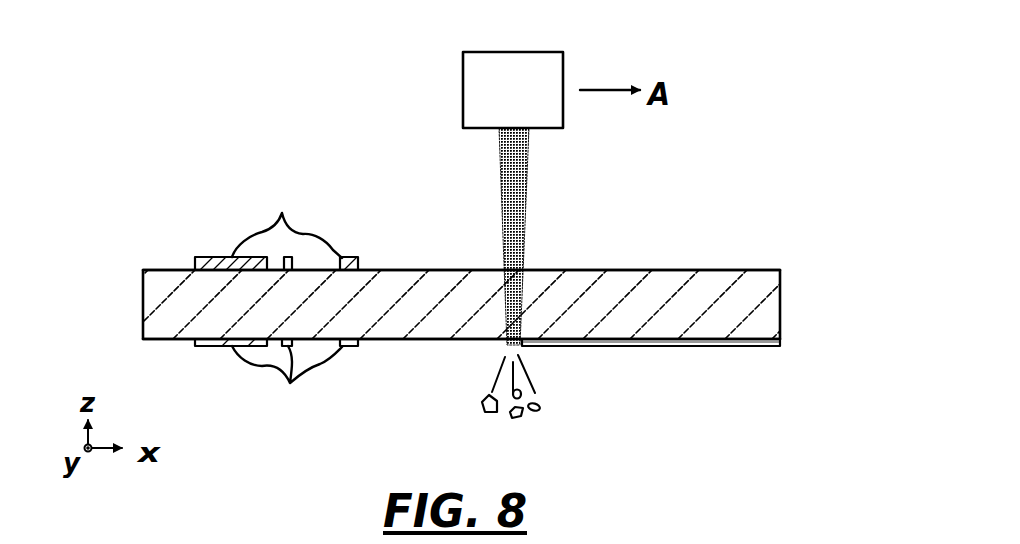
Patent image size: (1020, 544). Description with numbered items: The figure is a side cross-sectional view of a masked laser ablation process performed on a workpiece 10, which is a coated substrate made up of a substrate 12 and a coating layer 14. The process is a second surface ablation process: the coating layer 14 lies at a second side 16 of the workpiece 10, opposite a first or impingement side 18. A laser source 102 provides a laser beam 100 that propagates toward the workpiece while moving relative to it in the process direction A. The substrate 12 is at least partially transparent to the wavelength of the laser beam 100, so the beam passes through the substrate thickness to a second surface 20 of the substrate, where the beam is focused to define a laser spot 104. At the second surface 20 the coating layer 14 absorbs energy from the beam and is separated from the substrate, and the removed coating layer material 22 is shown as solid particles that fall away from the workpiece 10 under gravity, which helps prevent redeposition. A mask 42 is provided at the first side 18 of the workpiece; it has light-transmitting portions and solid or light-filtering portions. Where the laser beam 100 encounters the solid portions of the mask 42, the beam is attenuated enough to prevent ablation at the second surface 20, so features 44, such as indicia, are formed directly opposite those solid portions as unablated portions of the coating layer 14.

The workpiece 10 is at (143, 226).
The substrate 12 is at (621, 277).
The coating layer 14 is at (662, 347).
The second side 16 is at (712, 347).
The first side 18 is at (732, 270).
The second surface 20 is at (148, 342).
The removed coating layer material 22 is at (523, 415).
The mask 42 is at (276, 226).
The features 44 is at (276, 382).
The laser beam 100 is at (522, 228).
The laser source 102 is at (450, 81).
The laser spot 104 is at (516, 350).